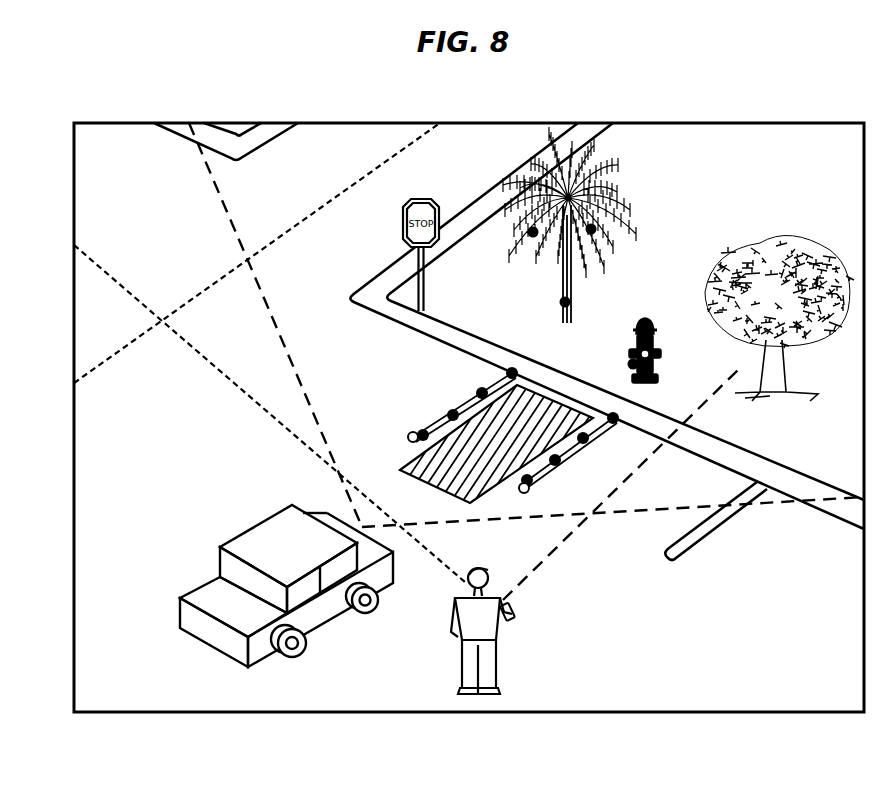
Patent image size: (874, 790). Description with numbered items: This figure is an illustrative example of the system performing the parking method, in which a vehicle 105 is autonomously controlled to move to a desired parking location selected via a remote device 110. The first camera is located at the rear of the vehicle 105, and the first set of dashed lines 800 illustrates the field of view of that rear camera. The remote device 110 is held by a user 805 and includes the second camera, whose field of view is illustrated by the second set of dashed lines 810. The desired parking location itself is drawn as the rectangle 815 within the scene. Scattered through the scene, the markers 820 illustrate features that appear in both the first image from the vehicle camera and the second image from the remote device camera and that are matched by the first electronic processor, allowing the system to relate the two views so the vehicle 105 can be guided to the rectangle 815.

The first set of dashed lines 800 is at (230, 216).
The user 805 is at (498, 665).
The second set of dashed lines 810 is at (543, 562).
The rectangle 815 is at (399, 468).
The markers 820 is at (600, 236).
The vehicle 105 is at (253, 527).
The remote device 110 is at (518, 607).